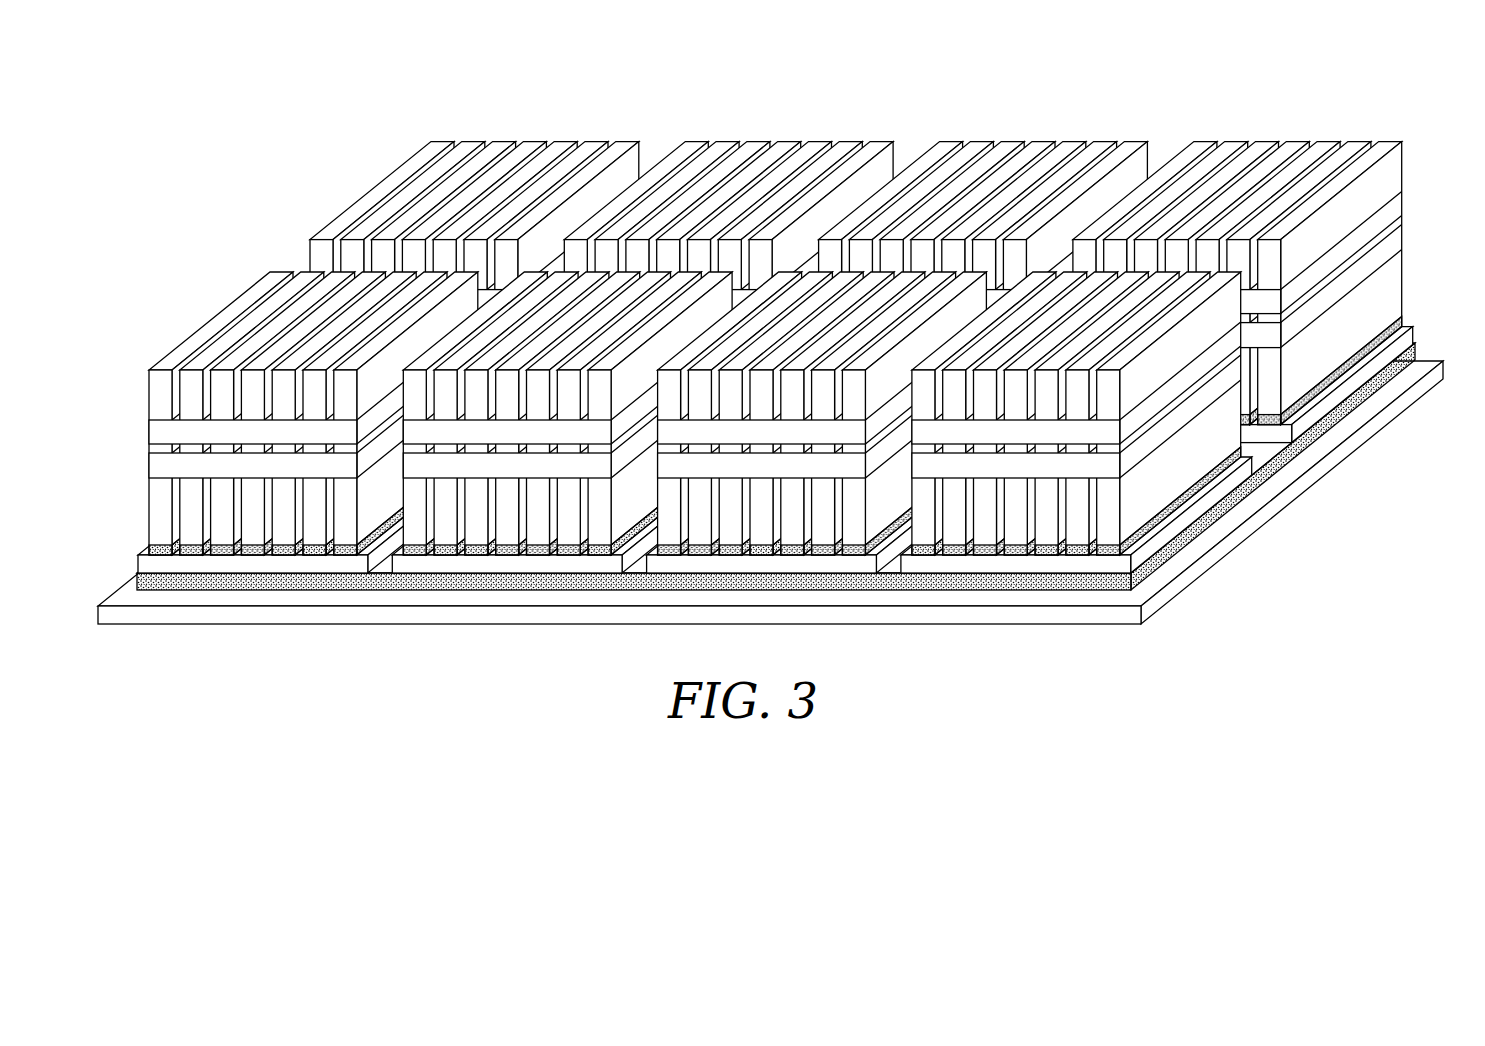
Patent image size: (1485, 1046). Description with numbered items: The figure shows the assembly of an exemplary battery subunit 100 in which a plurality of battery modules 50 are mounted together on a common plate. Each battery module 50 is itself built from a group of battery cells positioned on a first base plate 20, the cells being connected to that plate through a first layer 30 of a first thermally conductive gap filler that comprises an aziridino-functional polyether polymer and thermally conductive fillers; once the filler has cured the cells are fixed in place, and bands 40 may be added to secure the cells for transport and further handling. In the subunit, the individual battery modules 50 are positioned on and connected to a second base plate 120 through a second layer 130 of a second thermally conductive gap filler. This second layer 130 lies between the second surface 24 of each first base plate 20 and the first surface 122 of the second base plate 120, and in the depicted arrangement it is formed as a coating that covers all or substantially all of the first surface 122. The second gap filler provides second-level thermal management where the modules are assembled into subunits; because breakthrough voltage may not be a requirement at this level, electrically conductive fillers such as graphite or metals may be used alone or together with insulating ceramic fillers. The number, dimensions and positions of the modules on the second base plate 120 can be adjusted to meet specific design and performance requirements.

The battery subunit 100 is at (787, 380).
The battery module 50 is at (385, 150).
The bands 40 is at (1397, 240).
The first layer 30 is at (1015, 557).
The first base plate 20 is at (1075, 563).
The second surface 24 is at (935, 575).
The second base plate 120 is at (1157, 600).
The first surface 122 is at (1187, 553).
The second layer 130 is at (1231, 513).